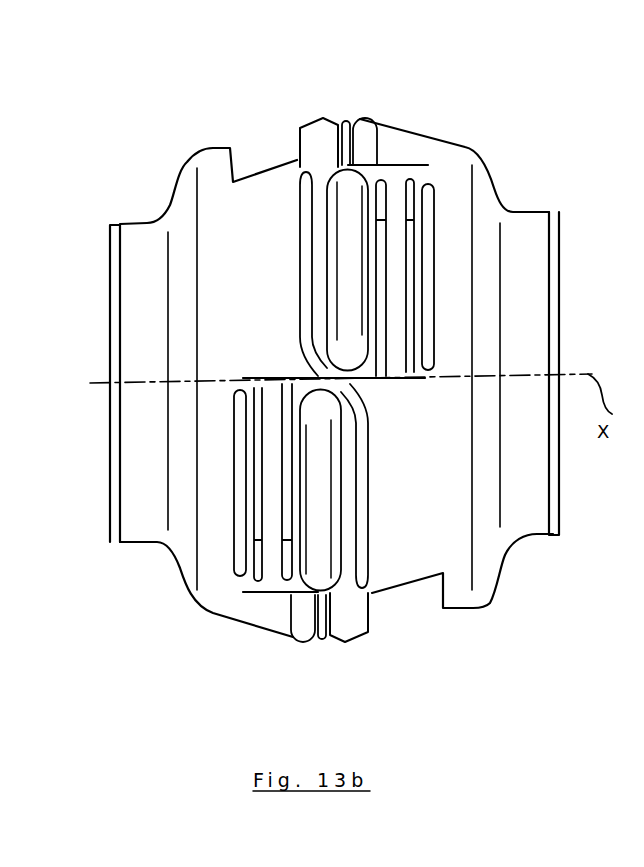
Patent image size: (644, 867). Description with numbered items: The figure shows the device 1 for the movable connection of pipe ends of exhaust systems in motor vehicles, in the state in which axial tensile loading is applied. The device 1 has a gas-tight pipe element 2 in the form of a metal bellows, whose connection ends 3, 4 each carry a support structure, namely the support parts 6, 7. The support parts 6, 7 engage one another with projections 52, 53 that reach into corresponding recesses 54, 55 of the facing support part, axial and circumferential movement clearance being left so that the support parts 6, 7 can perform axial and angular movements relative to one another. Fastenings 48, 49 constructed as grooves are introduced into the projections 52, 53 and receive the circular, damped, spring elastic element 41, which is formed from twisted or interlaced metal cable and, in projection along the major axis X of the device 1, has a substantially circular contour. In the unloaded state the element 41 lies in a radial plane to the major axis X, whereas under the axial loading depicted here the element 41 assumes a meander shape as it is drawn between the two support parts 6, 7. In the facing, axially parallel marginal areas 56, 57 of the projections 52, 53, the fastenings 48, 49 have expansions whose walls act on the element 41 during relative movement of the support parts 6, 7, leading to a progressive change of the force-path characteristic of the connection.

The device 1 is at (173, 632).
The pipe element 2 is at (420, 195).
The connection end 3 is at (110, 240).
The connection end 4 is at (560, 220).
The support part 6 is at (182, 210).
The support part 7 is at (480, 192).
The damped spring elastic element 41 is at (338, 135).
The fastening 48 is at (308, 175).
The fastening 49 is at (358, 497).
The projection 52 is at (350, 193).
The projection 53 is at (318, 572).
The recess 54 is at (410, 176).
The recess 55 is at (258, 584).
The marginal area 56 is at (310, 240).
The marginal area 57 is at (355, 583).